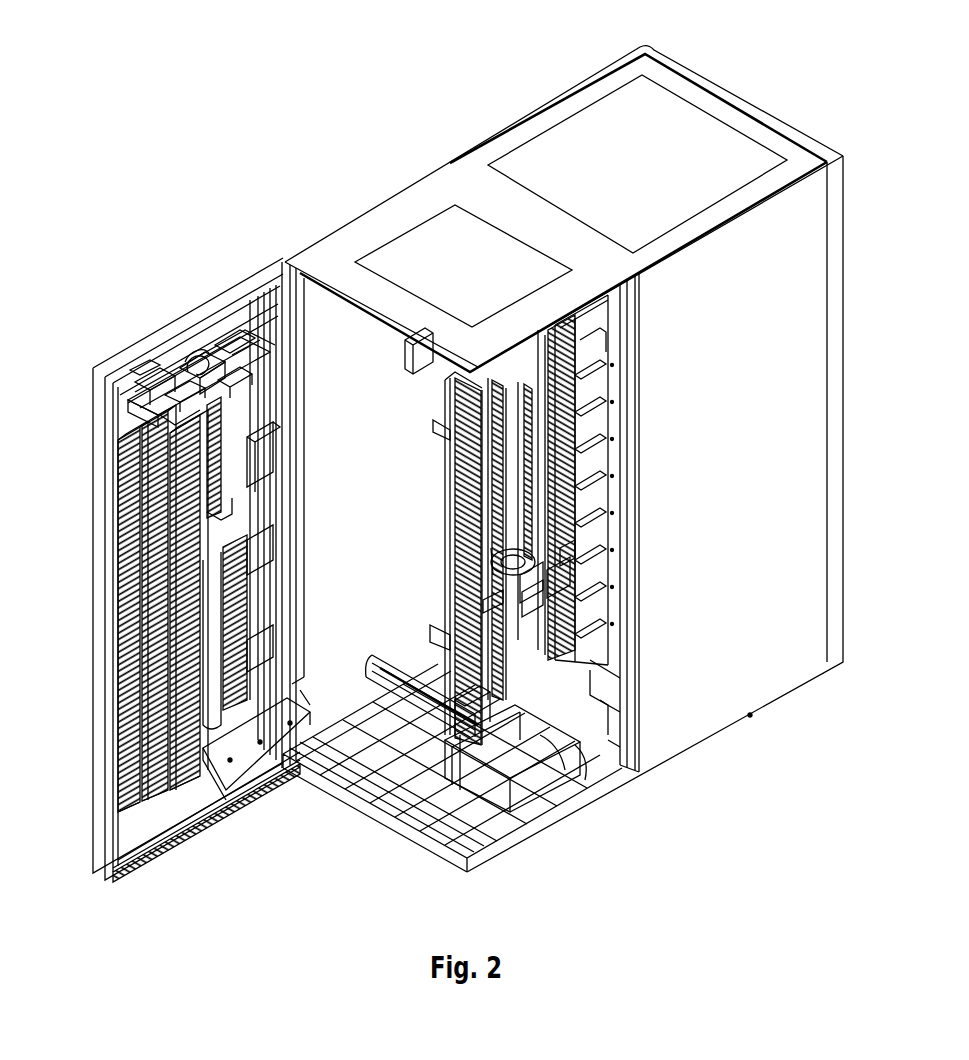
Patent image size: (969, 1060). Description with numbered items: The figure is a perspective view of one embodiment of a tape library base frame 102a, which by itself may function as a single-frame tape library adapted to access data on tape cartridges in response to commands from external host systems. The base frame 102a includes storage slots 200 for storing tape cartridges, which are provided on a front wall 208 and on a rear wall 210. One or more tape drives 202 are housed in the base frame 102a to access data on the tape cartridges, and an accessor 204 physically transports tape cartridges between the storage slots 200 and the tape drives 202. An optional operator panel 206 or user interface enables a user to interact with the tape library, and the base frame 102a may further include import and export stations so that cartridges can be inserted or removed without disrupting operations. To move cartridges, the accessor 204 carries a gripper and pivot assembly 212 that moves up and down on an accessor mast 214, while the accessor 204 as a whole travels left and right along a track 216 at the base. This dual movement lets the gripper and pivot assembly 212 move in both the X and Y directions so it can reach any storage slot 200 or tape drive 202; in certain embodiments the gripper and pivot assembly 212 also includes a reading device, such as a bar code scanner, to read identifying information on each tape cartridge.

The tape library base frame 102a is at (378, 69).
The storage slots 200 is at (122, 648).
The tape drives 202 is at (592, 360).
The accessor 204 is at (557, 746).
The operator panel 206 is at (265, 392).
The front wall 208 is at (125, 421).
The rear wall 210 is at (603, 712).
The gripper and pivot assembly 212 is at (592, 555).
The accessor mast 214 is at (487, 512).
The track 216 is at (383, 658).